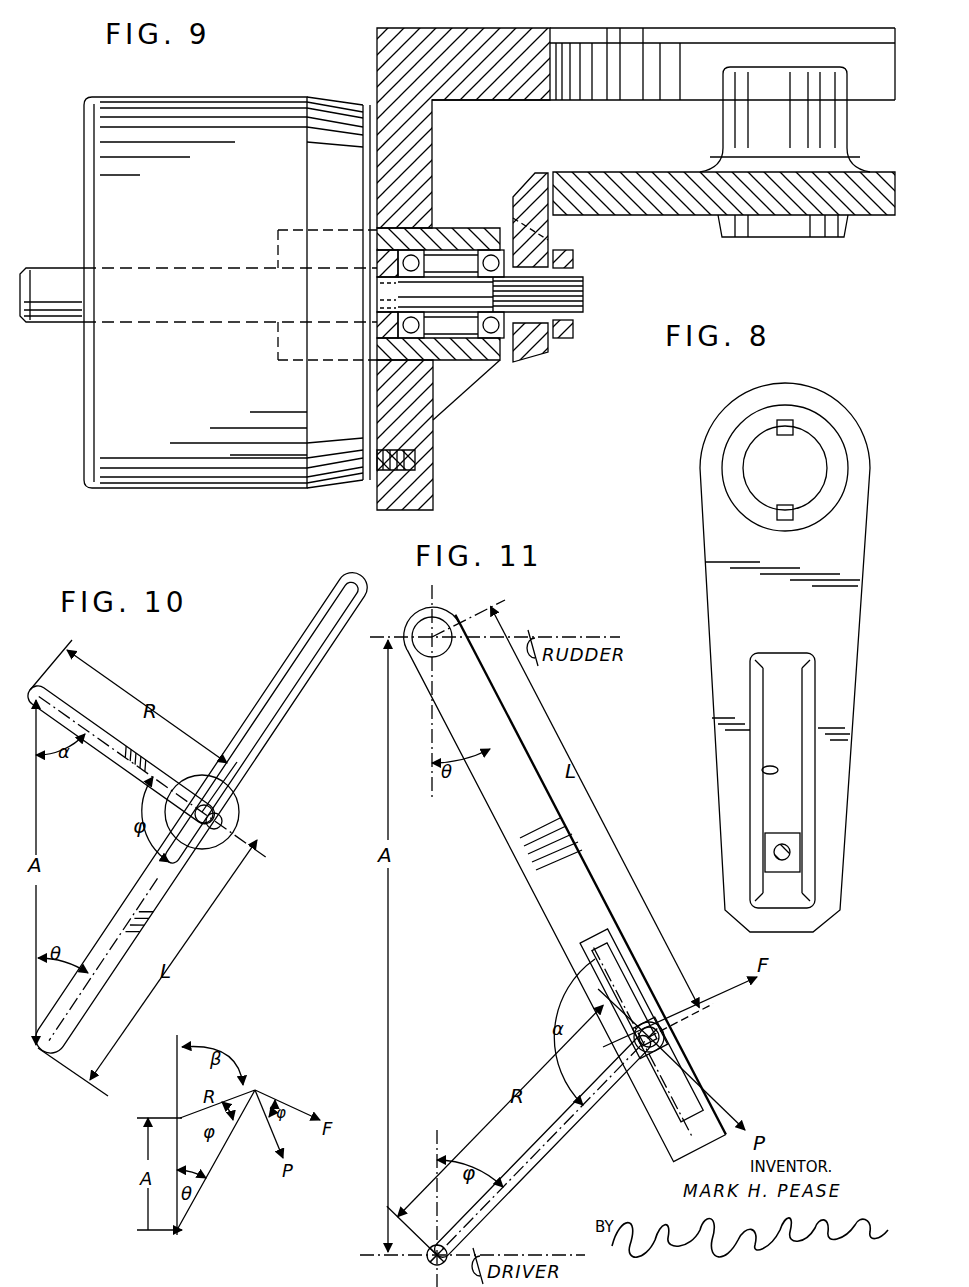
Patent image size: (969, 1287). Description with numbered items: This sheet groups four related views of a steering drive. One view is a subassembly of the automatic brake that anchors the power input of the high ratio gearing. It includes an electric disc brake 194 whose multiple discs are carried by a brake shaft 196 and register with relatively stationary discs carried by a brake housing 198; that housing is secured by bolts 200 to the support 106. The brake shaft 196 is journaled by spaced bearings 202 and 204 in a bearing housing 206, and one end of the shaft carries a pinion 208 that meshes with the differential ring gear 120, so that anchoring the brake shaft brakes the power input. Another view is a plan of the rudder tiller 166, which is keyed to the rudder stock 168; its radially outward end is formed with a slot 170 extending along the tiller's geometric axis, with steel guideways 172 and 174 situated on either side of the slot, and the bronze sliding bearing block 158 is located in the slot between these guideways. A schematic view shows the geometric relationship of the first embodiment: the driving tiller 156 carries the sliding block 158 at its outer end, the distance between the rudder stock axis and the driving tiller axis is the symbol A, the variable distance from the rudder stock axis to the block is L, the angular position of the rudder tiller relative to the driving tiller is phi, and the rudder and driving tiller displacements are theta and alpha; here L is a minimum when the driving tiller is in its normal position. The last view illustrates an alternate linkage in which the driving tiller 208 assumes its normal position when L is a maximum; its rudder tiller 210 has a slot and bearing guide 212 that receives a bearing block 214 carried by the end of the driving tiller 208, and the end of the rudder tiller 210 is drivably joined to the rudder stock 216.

In FIG. 9, the support 106 is at (397, 68).
In FIG. 9, the differential ring gear 120 is at (637, 217).
In FIG. 9, the electric disc brake 194 is at (146, 458).
In FIG. 9, the brake shaft 196 is at (45, 322).
In FIG. 9, the brake housing 198 is at (175, 125).
In FIG. 9, the bolts 200 is at (408, 464).
In FIG. 9, the bearing 202 is at (492, 256).
In FIG. 9, the bearing 204 is at (428, 372).
In FIG. 9, the bearing housing 206 is at (442, 230).
In FIG. 9, the pinion / driving tiller 208 is at (534, 354).
In FIG. 11, the pinion / driving tiller 208 is at (531, 1159).
In FIG. 8, the rudder tiller 166 is at (732, 609).
In FIG. 8, the rudder stock 168 is at (764, 490).
In FIG. 8, the slot 170 is at (765, 773).
In FIG. 8, the steel guideway 172 is at (755, 818).
In FIG. 8, the steel guideway 174 is at (808, 820).
In FIG. 8, the sliding bearing block 158 is at (790, 863).
In FIG. 10, the sliding bearing block 158 is at (214, 813).
In FIG. 10, the driving tiller 156 is at (131, 758).
In FIG. 11, the rudder tiller 210 is at (553, 890).
In FIG. 11, the slot and bearing guide 212 is at (623, 980).
In FIG. 11, the bearing block 214 is at (640, 1038).
In FIG. 11, the rudder stock 216 is at (436, 626).